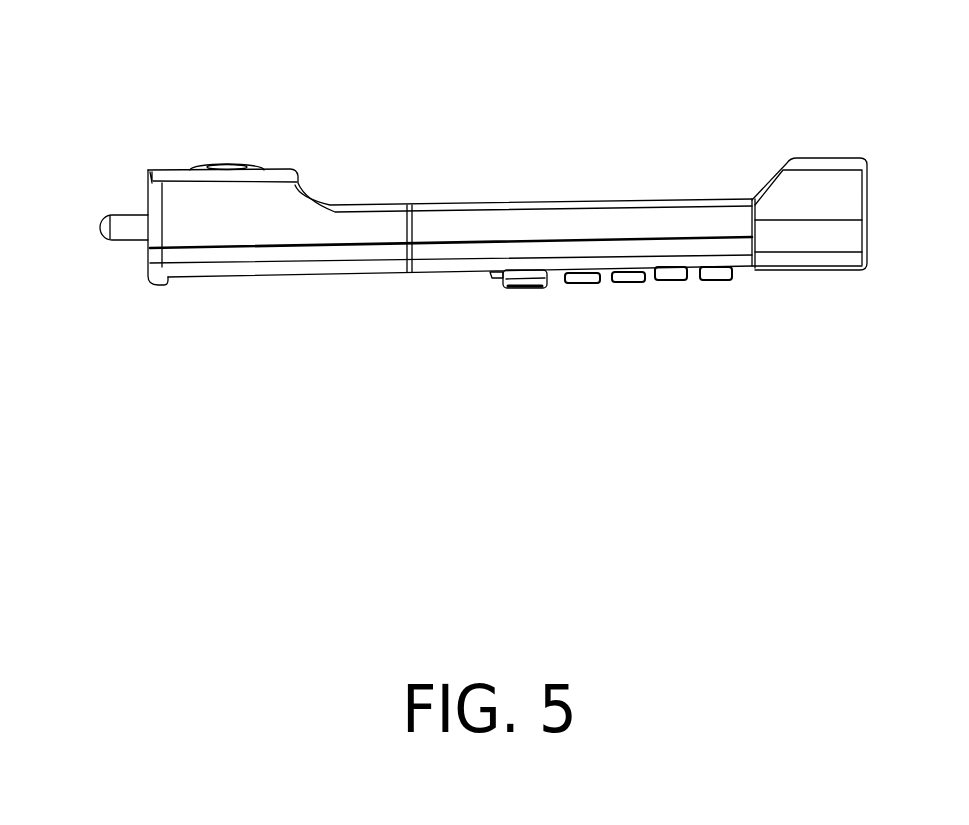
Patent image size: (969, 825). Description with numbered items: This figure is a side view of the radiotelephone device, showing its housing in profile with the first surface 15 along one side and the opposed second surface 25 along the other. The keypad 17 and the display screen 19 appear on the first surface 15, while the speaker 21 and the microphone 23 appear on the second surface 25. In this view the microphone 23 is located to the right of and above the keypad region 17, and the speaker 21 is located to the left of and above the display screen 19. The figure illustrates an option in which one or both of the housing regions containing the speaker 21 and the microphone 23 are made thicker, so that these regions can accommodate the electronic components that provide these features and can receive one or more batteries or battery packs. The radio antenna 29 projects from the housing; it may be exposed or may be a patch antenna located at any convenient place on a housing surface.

The first surface 15 is at (857, 303).
The keypad 17 is at (527, 288).
The display screen 19 is at (268, 275).
The speaker 21 is at (230, 163).
The microphone 23 is at (833, 157).
The second surface 25 is at (158, 152).
The radio antenna 29 is at (125, 228).